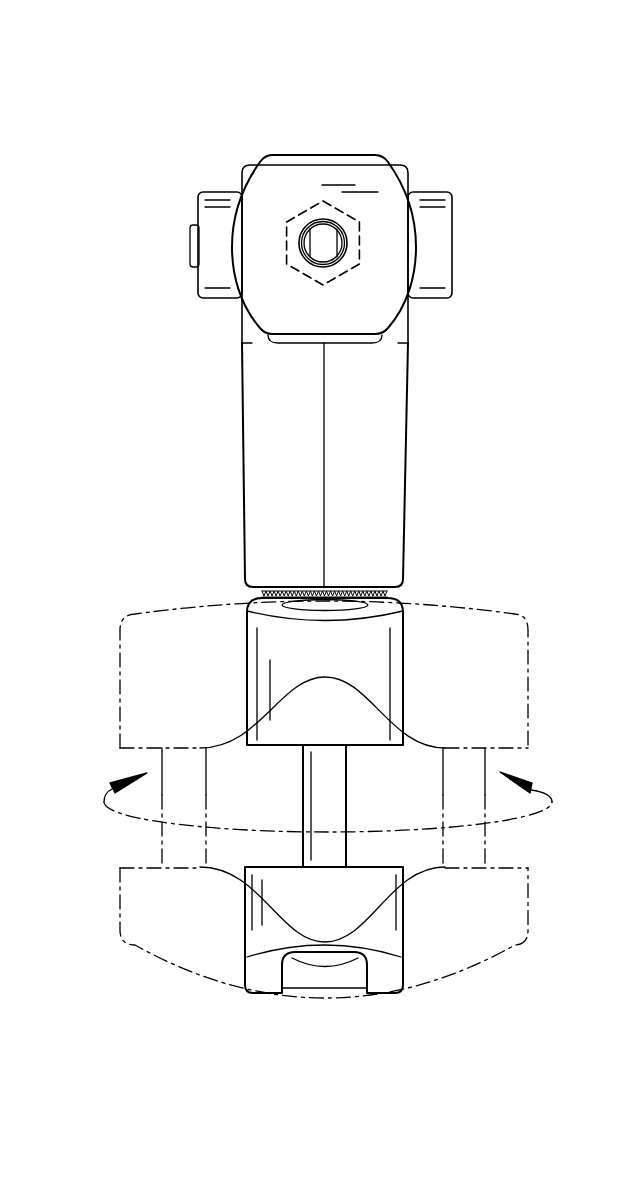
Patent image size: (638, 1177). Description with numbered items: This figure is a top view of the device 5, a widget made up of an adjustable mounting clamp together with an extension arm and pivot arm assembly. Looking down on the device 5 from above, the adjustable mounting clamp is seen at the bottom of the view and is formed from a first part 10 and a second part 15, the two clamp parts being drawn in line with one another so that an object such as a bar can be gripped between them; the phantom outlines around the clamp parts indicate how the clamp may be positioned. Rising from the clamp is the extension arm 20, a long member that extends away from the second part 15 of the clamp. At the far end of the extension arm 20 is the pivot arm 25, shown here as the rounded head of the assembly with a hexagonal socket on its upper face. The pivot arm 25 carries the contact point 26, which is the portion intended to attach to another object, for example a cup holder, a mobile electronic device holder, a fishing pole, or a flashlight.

The device 5 is at (527, 170).
The first part of clamp 10 is at (405, 965).
The second part of clamp 15 is at (250, 688).
The extension arm 20 is at (407, 479).
The pivot arm 25 is at (300, 156).
The contact point 26 is at (270, 303).